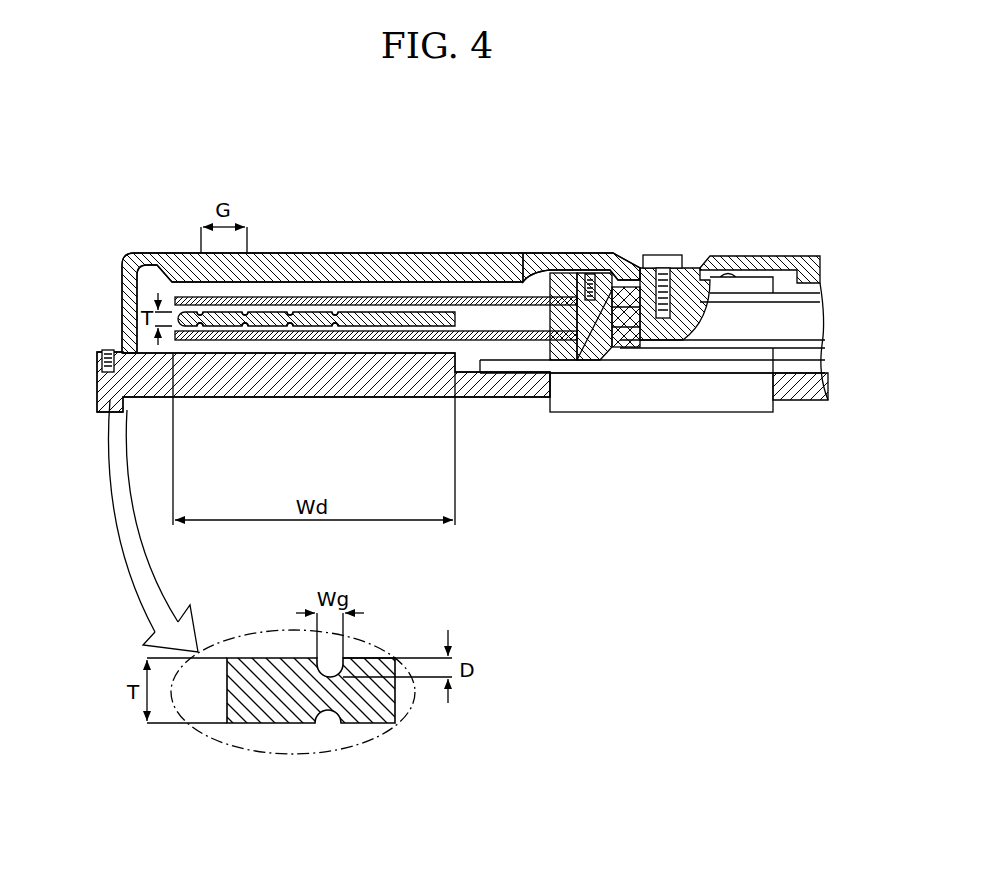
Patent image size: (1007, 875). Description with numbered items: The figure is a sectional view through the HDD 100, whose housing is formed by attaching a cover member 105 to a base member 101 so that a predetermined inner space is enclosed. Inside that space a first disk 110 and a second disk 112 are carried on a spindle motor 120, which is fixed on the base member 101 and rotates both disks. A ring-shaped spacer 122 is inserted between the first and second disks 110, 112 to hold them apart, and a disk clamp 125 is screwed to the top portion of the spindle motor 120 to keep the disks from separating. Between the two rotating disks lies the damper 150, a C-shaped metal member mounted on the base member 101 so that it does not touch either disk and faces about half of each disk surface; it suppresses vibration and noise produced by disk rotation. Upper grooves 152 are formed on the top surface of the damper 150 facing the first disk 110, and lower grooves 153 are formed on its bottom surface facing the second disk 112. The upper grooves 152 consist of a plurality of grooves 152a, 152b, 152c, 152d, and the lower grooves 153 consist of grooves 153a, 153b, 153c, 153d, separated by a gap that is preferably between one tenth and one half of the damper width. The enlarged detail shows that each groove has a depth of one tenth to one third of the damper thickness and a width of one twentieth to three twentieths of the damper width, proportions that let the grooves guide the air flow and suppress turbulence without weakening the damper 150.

The HDD 100 is at (103, 237).
The base member 101 is at (152, 398).
The cover member 105 is at (802, 257).
The first disk 110 is at (470, 345).
The second disk 112 is at (530, 268).
The spindle motor 120 is at (540, 357).
The spacer 122 is at (562, 290).
The disk clamp 125 is at (605, 280).
The damper 150 is at (466, 282).
The upper grooves 152 is at (155, 160).
The groove 152a is at (336, 311).
The groove 152b is at (291, 311).
The groove 152c is at (246, 311).
The groove 152d is at (199, 311).
The lower grooves 153 is at (440, 440).
The groove 153a is at (336, 327).
The groove 153b is at (291, 327).
The groove 153c is at (245, 327).
The groove 153d is at (200, 327).